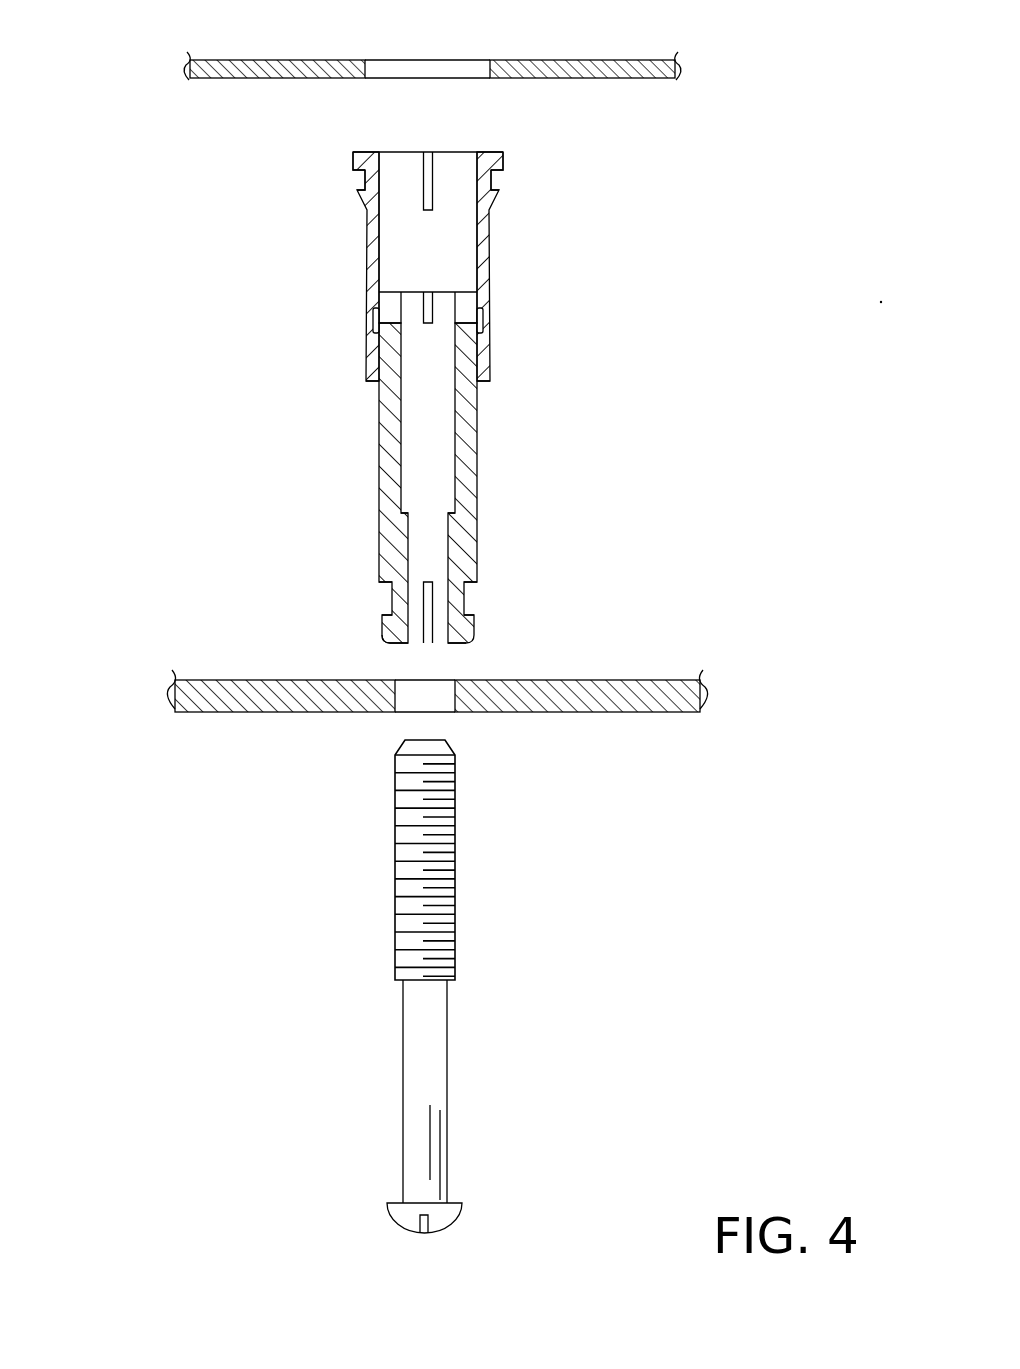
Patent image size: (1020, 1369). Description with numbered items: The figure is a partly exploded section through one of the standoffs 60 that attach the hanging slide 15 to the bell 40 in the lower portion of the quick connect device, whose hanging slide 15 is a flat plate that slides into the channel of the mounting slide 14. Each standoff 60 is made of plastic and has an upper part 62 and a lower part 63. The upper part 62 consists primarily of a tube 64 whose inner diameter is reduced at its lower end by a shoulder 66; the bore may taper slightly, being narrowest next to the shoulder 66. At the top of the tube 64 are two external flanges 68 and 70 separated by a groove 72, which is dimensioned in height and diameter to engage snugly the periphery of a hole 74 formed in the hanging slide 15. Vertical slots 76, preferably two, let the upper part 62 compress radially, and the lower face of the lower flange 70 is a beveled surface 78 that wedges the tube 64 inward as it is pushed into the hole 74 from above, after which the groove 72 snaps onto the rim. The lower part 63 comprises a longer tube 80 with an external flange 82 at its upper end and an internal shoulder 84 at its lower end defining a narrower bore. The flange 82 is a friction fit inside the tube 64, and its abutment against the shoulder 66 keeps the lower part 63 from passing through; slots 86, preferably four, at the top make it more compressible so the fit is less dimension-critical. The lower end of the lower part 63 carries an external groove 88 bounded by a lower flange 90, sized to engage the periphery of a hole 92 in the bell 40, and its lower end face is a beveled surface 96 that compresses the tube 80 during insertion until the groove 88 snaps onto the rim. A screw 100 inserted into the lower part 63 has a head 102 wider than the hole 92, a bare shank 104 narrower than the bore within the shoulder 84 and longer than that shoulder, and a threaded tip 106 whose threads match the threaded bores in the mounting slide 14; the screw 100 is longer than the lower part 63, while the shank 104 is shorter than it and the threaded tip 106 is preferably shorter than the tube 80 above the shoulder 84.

The mounting slide 14 is at (428, 642).
The hanging slide 15 is at (376, 40).
The bell 40 is at (429, 678).
The standoff 60 is at (429, 382).
The upper part 62 is at (432, 243).
The lower part 63 is at (429, 463).
The tube 64 is at (485, 245).
The shoulder 66 is at (488, 360).
The upper external flange 68 is at (357, 165).
The lower external flange 70 is at (360, 203).
The groove 72 is at (500, 180).
The hole 74 is at (430, 70).
The vertical slots 76 is at (431, 152).
The beveled surface 78 is at (497, 207).
The tube 80 is at (468, 462).
The external flange 82 is at (375, 300).
The internal shoulder 84 is at (470, 552).
The slots 86 is at (430, 292).
The external groove 88 is at (394, 598).
The lower flange 90 is at (475, 620).
The hole 92 is at (420, 705).
The beveled surface 96 is at (470, 650).
The screw 100 is at (422, 991).
The head 102 is at (460, 1212).
The bare shank 104 is at (432, 1100).
The threaded tip 106 is at (458, 865).